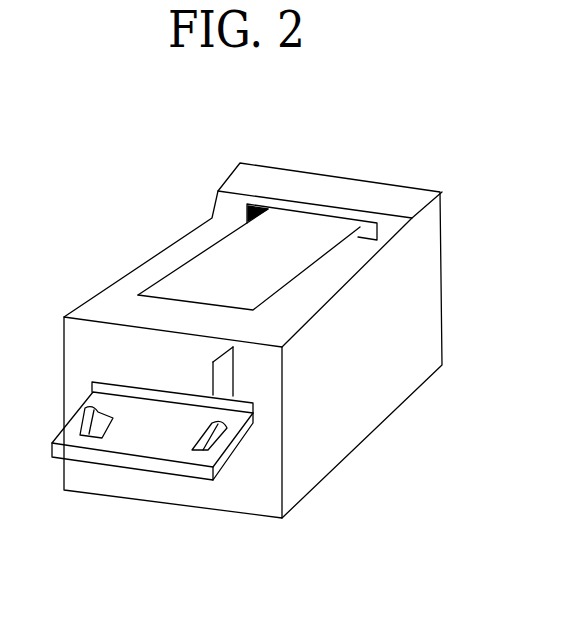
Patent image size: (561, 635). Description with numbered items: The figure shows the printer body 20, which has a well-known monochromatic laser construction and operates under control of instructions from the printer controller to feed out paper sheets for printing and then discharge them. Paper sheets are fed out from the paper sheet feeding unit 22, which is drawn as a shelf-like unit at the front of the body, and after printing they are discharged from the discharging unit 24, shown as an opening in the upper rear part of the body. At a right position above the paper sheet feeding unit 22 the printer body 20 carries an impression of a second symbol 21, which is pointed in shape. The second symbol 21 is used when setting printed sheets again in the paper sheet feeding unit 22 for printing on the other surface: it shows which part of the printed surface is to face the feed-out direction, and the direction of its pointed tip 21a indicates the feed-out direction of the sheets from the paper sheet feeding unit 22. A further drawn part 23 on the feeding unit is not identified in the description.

The printer body 20 is at (422, 287).
The second symbol 21 is at (233, 380).
The pointed tip 21a is at (213, 358).
The paper sheet feeding unit 22 is at (240, 443).
The rear rib of shelf 23 is at (165, 402).
The discharging unit 24 is at (233, 267).